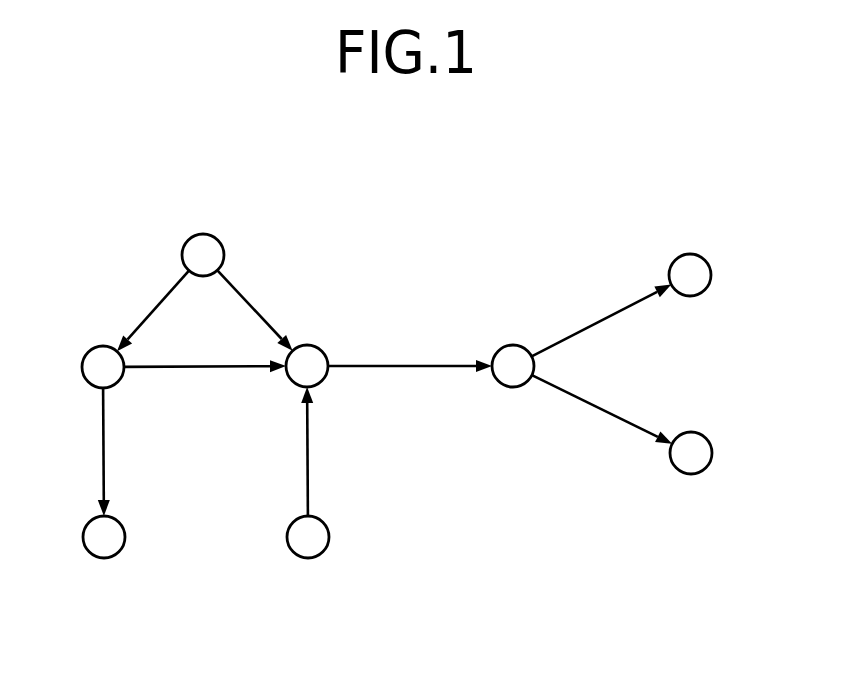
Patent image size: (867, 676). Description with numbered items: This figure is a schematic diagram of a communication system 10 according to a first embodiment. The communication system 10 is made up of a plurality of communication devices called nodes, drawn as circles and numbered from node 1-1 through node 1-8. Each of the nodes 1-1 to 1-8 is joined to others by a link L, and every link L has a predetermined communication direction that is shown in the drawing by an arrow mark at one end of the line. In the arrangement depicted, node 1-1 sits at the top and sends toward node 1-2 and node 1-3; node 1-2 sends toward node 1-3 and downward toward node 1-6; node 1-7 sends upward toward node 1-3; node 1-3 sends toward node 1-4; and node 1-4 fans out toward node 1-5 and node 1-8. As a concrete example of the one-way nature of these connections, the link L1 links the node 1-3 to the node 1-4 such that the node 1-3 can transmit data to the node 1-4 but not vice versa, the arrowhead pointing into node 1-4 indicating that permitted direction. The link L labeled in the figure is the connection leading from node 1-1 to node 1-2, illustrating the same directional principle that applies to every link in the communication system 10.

The communication system 10 is at (496, 182).
The node 1-1 is at (204, 233).
The node 1-2 is at (97, 346).
The node 1-3 is at (314, 343).
The node 1-4 is at (509, 344).
The node 1-5 is at (690, 253).
The node 1-6 is at (104, 559).
The node 1-7 is at (308, 559).
The node 1-8 is at (690, 475).
The link L is at (151, 313).
The link L1 is at (450, 369).